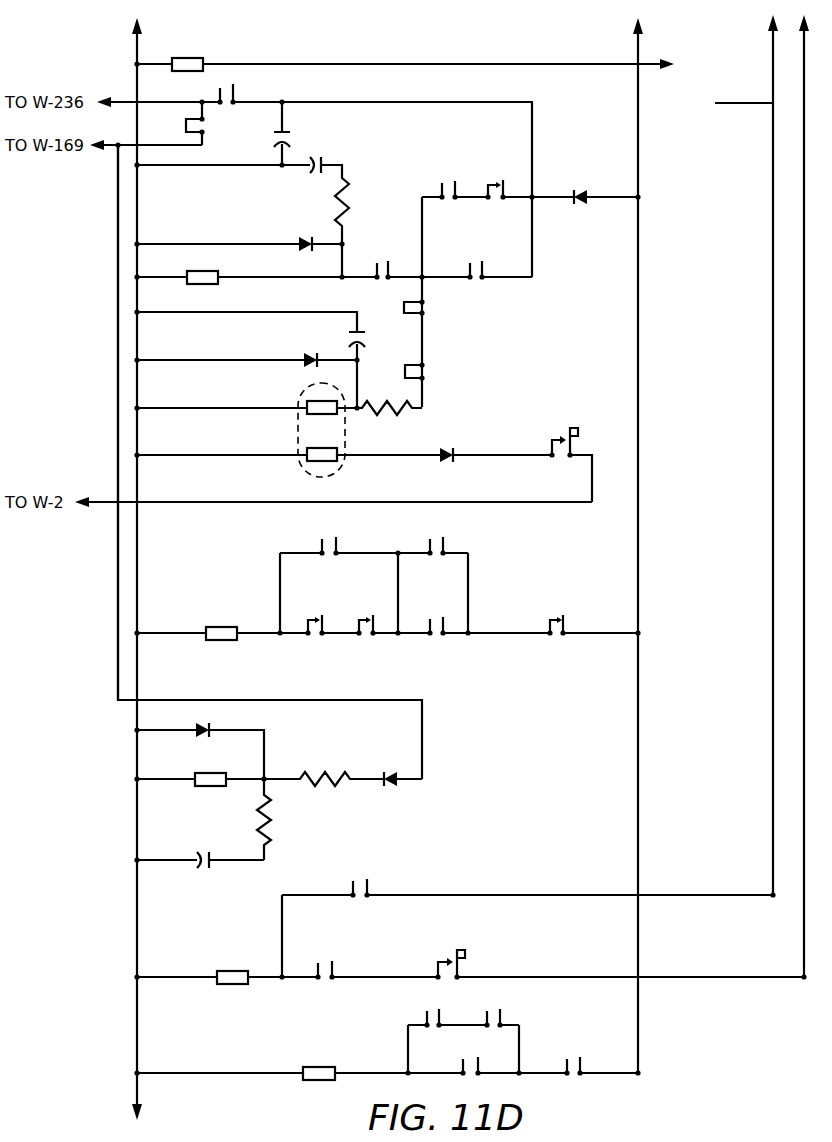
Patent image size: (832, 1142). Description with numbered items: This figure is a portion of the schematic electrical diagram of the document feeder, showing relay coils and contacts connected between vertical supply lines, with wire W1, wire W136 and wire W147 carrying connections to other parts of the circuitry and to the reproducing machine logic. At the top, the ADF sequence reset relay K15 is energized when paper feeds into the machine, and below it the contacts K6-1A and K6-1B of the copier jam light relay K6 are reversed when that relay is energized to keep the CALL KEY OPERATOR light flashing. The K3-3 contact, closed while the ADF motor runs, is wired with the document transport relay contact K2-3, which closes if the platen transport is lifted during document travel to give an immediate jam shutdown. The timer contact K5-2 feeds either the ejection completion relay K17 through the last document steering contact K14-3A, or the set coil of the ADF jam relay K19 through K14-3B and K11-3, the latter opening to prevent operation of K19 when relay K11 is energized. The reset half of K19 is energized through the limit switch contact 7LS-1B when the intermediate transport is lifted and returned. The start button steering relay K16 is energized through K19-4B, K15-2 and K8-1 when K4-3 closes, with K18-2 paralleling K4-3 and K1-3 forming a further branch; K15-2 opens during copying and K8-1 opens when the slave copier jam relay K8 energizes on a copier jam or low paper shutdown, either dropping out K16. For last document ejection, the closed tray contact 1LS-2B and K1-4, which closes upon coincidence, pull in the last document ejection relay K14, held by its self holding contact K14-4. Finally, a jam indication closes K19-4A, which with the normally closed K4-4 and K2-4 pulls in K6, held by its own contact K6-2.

The ADF sequence reset relay K15 is at (192, 56).
The relay K6 contact K6-1A is at (252, 91).
The relay K6 contact K6-1B is at (221, 123).
The relay K3 contact K3-3 is at (435, 181).
The document transport relay contact K2-3 is at (502, 181).
The last document steering contact K14-3A is at (385, 261).
The 1TR timer relay contact K5-2 is at (473, 261).
The ejection completion relay K17 is at (206, 268).
The relay K14 contact K14-3B is at (447, 308).
The relay K11 contact K11-3 is at (442, 373).
The ADF jam relay K19 is at (321, 430).
The limit switch 7LS contact 7LS-1B is at (558, 433).
The relay K1 contact K1-3 is at (326, 535).
The relay K18 contact K18-2 is at (436, 535).
The start button steering relay K16 is at (220, 624).
The slave copier jam relay contact K8-1 is at (314, 614).
The ADF sequence reset relay contact K15-2 is at (359, 637).
The ADF on relay contact K4-3 is at (432, 614).
The ADF jam relay contact K19-4B is at (556, 614).
The slave copier jam relay K8 is at (210, 770).
The relay K14 self holding contact K14-4 is at (354, 876).
The relay K1 contact K1-4 is at (325, 959).
The limit switch 1LS-2 contact 1LS-2B is at (452, 954).
The last document ejection relay K14 is at (232, 966).
The relay K6 holding contact K6-2 is at (425, 1010).
The document transport relay contact K2-4 is at (494, 1010).
The ADF on relay contact K4-4 is at (467, 1057).
The copier jam light relay K6 is at (319, 1062).
The ADF jam relay contact K19-4A is at (575, 1057).
The wire W1 is at (118, 297).
The wire W136 is at (464, 64).
The wire W147 is at (756, 103).